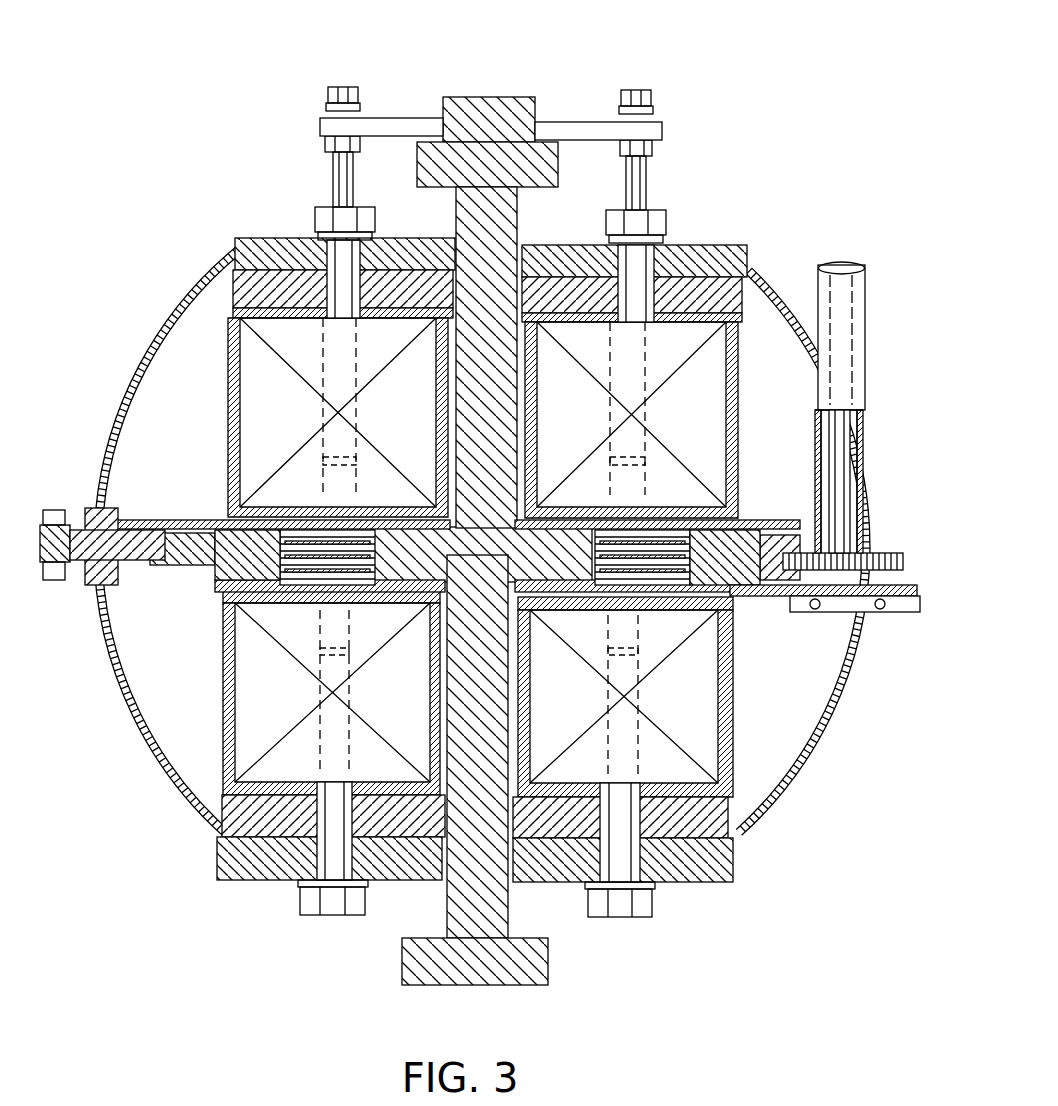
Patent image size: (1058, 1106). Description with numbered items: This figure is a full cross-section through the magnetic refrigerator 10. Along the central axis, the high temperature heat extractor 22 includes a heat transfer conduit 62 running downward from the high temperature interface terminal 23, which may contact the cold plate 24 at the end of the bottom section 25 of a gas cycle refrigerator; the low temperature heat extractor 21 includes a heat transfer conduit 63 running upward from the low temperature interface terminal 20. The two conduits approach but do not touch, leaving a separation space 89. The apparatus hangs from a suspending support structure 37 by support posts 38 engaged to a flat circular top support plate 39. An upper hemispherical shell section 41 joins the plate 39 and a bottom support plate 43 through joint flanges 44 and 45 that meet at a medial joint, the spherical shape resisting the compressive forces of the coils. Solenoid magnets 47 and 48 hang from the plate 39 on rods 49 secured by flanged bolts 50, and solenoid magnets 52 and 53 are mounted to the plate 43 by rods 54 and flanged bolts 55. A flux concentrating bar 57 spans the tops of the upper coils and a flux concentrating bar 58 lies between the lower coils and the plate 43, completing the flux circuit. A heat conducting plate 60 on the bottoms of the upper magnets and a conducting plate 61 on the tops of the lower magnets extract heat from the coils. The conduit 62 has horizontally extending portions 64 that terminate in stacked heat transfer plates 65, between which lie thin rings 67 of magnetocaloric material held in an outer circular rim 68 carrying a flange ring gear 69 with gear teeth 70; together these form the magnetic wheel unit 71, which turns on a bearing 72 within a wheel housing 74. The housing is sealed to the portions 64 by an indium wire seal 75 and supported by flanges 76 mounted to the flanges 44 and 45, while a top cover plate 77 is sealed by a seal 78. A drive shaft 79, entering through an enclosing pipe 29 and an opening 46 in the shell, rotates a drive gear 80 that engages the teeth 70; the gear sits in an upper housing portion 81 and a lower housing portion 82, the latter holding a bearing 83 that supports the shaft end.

The magnetic refrigerator 10 is at (848, 716).
The low temperature interface terminal 20 is at (530, 985).
The low temperature heat extractor 21 is at (512, 900).
The high temperature heat extractor 22 is at (455, 232).
The high temperature interface terminal 23 is at (545, 185).
The cold plate 24 is at (560, 150).
The bottom section 25 is at (540, 100).
The enclosing pipe 29 is at (868, 300).
The suspending support structure 37 is at (600, 122).
The support posts 38 is at (662, 165).
The top support plate 39 is at (268, 238).
The upper hemispherical shell section 41 is at (195, 298).
The bottom support plate 43 is at (245, 880).
The joint flange 44 is at (68, 525).
The joint flange 45 is at (52, 580).
The opening 46 is at (870, 470).
The solenoid magnet 47 is at (740, 385).
The solenoid magnet 48 is at (230, 355).
The rods 49 is at (360, 338).
The flanged bolts 50 is at (322, 205).
The solenoid magnet 52 is at (735, 665).
The solenoid magnet 53 is at (225, 682).
The rods 54 is at (325, 772).
The flanged bolts 55 is at (325, 915).
The flux concentrating bar 57 is at (745, 258).
The flux concentrating bar 58 is at (745, 820).
The heat conducting plate 60 is at (740, 520).
The conducting plate 61 is at (740, 600).
The heat transfer conduit 62 is at (540, 383).
The heat transfer conduit 63 is at (438, 640).
The horizontally extending portions 64 is at (425, 560).
The heat transfer plates 65 is at (332, 560).
The rings 67 is at (312, 592).
The outer circular rim 68 is at (295, 545).
The flange ring gear 69 is at (192, 525).
The gear teeth 70 is at (178, 548).
The magnetic wheel unit 71 is at (300, 560).
The bearing 72 is at (215, 575).
The wheel housing 74 is at (200, 562).
The indium wire seal 75 is at (360, 593).
The flanges 76 is at (118, 555).
The top cover plate 77 is at (150, 520).
The indium wire seal 78 is at (382, 575).
The drive shaft 79 is at (850, 502).
The drive gear 80 is at (905, 562).
The upper housing portion 81 is at (882, 545).
The lower housing portion 82 is at (832, 612).
The bearing 83 is at (870, 605).
The separation space 89 is at (528, 460).